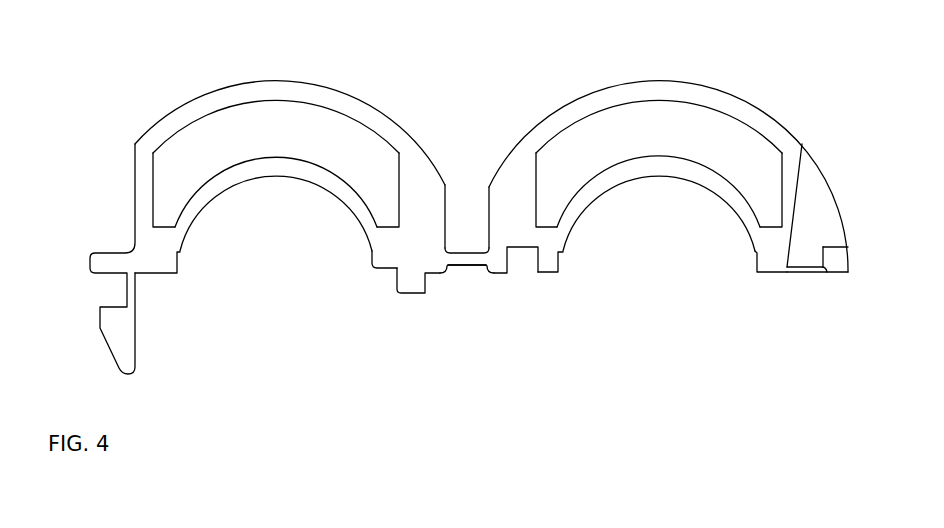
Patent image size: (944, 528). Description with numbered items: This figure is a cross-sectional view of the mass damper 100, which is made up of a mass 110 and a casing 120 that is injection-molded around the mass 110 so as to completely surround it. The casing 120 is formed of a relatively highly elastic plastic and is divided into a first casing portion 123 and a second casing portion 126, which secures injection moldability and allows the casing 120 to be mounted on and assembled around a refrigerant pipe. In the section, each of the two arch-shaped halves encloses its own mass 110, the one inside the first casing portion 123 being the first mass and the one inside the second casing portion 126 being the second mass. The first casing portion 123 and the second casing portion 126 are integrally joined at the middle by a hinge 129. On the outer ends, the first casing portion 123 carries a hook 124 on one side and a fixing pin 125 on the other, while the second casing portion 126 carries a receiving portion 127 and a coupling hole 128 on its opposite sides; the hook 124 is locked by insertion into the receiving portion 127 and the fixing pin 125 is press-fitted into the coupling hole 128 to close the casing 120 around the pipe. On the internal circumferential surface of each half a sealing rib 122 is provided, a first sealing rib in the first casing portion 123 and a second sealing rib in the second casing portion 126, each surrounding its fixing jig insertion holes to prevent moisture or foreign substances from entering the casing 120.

The mass damper 100 is at (158, 104).
The mass 110 is at (272, 116).
The casing 120 is at (540, 56).
The sealing rib 122 is at (183, 253).
The first casing portion 123 is at (392, 123).
The hook 124 is at (130, 357).
The fixing pin 125 is at (411, 295).
The second casing portion 126 is at (553, 112).
The receiving portion 127 is at (808, 253).
The coupling hole 128 is at (535, 257).
The hinge 129 is at (467, 264).